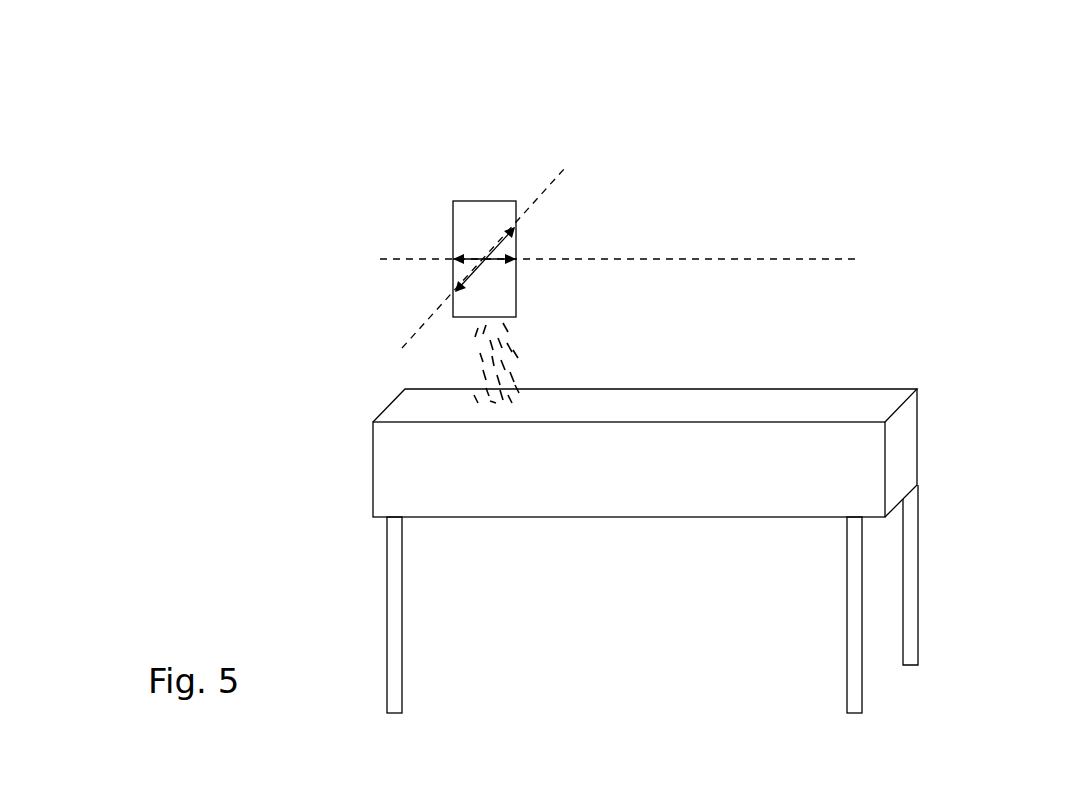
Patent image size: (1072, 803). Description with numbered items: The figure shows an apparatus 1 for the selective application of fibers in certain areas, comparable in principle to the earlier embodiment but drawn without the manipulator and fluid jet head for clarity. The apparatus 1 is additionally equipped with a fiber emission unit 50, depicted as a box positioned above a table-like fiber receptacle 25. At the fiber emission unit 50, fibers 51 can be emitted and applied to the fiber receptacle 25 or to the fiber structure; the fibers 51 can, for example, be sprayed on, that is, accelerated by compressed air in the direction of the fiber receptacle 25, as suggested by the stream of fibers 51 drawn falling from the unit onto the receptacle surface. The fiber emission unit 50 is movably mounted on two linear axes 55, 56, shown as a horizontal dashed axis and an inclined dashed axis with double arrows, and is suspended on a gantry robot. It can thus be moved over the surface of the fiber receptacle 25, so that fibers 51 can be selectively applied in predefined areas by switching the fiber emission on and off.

The apparatus 1 is at (905, 176).
The fiber receptacle 25 is at (837, 465).
The fiber emission unit 50 is at (468, 230).
The fibers 51 is at (468, 356).
The linear axis 55 is at (652, 257).
The linear axis 56 is at (545, 192).